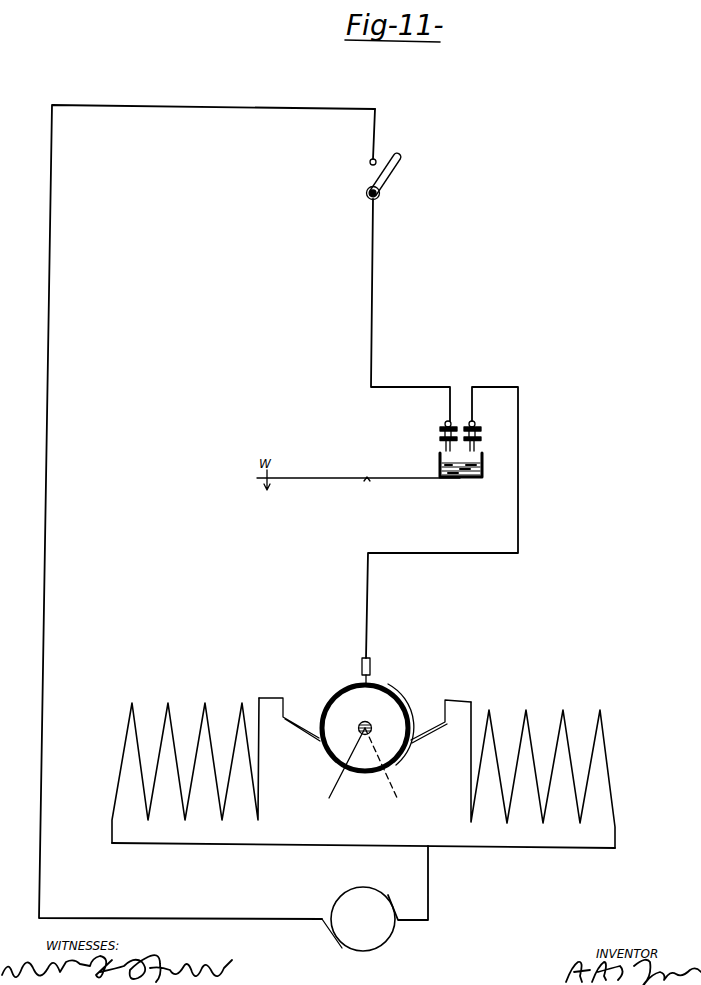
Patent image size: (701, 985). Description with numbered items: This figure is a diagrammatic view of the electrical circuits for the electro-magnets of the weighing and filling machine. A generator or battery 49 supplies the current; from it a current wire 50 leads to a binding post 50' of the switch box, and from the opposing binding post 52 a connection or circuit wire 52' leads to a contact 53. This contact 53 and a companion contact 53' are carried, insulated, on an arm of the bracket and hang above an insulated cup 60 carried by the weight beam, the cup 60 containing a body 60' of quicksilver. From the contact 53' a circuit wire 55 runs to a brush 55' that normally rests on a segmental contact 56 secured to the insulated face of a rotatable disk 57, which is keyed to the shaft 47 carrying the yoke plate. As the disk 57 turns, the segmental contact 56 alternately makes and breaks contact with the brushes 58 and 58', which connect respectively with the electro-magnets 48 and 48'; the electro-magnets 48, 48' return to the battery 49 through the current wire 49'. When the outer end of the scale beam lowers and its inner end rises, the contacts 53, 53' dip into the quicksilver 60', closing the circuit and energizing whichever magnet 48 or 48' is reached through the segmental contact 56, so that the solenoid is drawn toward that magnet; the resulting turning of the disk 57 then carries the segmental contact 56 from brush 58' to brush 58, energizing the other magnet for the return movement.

The current wire 50 is at (207, 512).
The binding post 50' is at (403, 137).
The binding post 52 is at (396, 202).
The circuit wire 52' is at (410, 310).
The contact 53 is at (431, 436).
The contact 53' is at (486, 426).
The insulated cup 60 is at (467, 475).
The body of quicksilver 60' is at (442, 467).
The circuit wire 55 is at (456, 522).
The brush 55' is at (382, 655).
The segmental contact 56 is at (396, 697).
The shaft 47 is at (388, 724).
The rotatable disk 57 is at (380, 750).
The brush 58 is at (441, 728).
The brush 58' is at (289, 726).
The electro-magnet 48 is at (543, 765).
The electro-magnet 48' is at (185, 760).
The current wire 49' is at (430, 883).
The generator or battery 49 is at (367, 922).